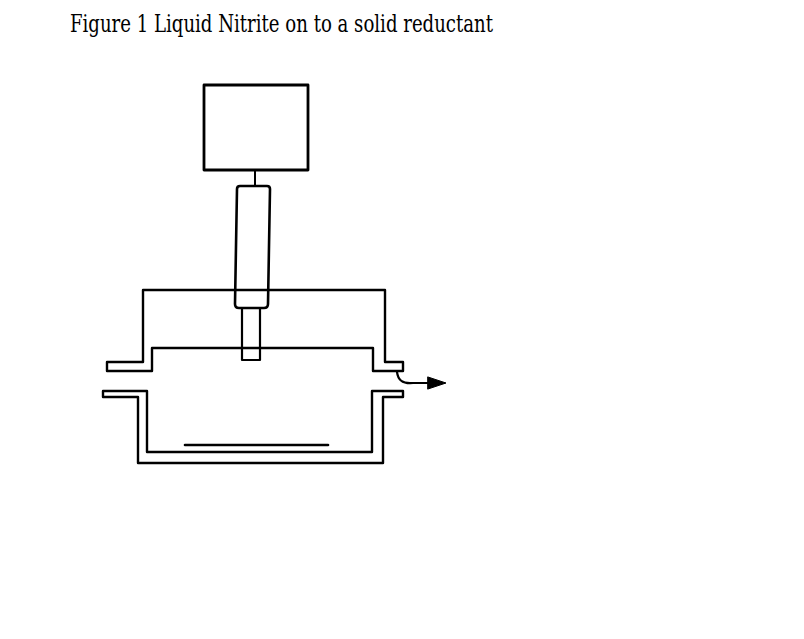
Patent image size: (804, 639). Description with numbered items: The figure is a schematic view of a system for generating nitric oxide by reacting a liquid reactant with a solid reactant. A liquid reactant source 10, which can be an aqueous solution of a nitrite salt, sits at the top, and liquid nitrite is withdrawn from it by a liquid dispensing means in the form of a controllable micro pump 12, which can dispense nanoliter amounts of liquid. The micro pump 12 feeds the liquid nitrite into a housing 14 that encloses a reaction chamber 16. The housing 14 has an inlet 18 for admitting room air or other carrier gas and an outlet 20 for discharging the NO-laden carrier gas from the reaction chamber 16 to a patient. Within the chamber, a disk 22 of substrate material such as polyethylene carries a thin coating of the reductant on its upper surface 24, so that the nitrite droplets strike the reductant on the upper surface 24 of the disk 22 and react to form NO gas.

The liquid reactant source 10 is at (308, 143).
The micro pump 12 is at (255, 233).
The housing 14 is at (370, 290).
The reaction chamber 16 is at (187, 415).
The inlet 18 is at (110, 373).
The outlet 20 is at (413, 383).
The disk 22 is at (267, 445).
The upper surface 24 is at (299, 446).